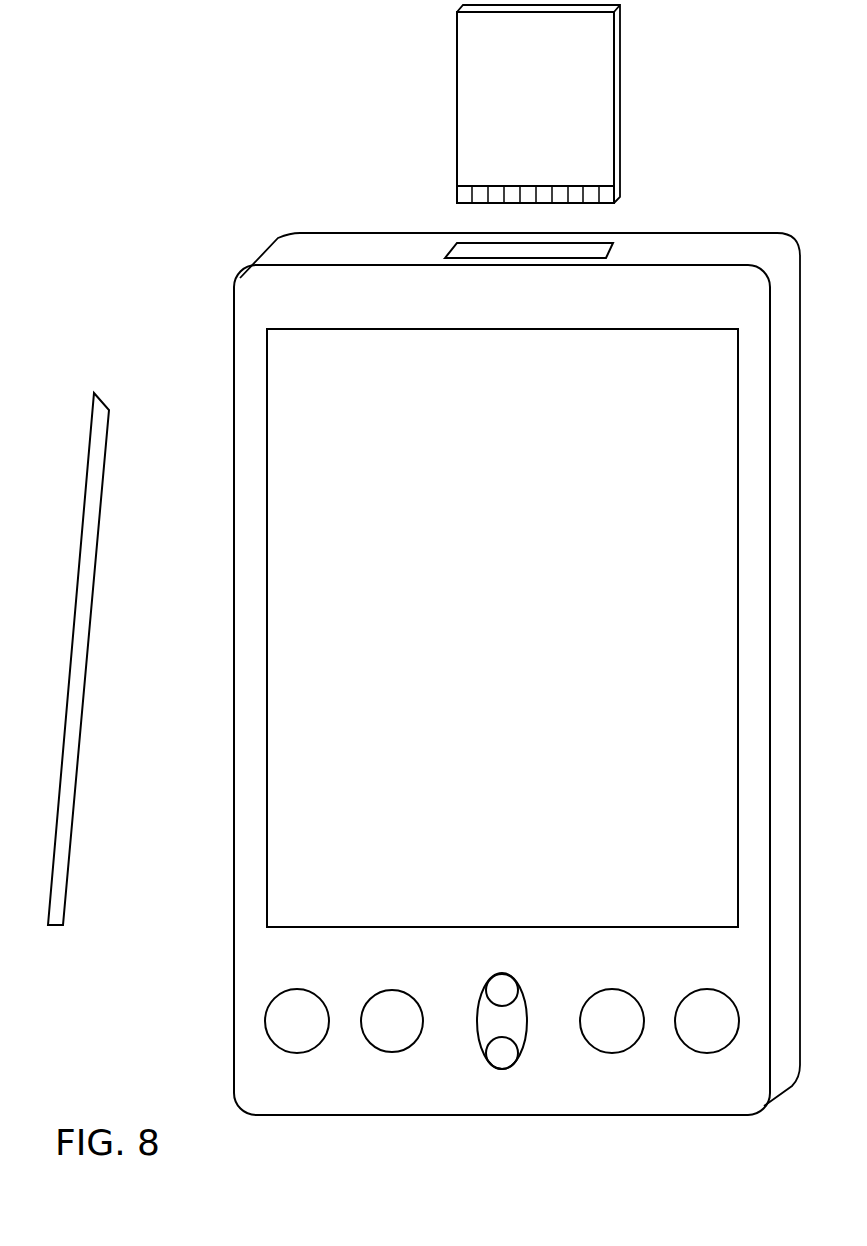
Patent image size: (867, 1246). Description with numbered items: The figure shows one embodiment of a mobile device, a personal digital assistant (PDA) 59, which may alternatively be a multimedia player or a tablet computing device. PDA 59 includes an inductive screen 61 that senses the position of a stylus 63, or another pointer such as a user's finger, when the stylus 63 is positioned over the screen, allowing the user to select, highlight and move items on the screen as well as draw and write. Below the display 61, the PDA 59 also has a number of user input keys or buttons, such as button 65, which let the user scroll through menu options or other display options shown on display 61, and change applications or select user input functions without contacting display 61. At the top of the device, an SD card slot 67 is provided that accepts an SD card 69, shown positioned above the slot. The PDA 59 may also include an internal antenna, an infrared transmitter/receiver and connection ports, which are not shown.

The personal digital assistant 59 is at (196, 454).
The inductive screen 61 is at (466, 622).
The stylus 63 is at (62, 927).
The button 65 is at (282, 1013).
The SD card slot 67 is at (535, 250).
The SD card 69 is at (457, 107).